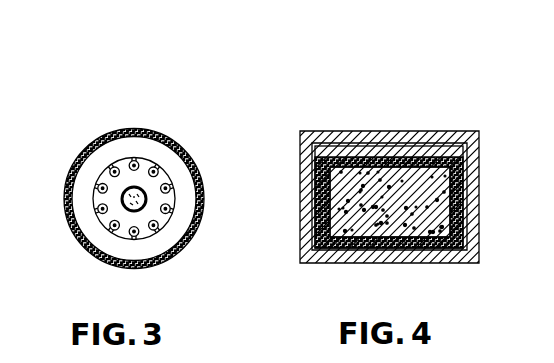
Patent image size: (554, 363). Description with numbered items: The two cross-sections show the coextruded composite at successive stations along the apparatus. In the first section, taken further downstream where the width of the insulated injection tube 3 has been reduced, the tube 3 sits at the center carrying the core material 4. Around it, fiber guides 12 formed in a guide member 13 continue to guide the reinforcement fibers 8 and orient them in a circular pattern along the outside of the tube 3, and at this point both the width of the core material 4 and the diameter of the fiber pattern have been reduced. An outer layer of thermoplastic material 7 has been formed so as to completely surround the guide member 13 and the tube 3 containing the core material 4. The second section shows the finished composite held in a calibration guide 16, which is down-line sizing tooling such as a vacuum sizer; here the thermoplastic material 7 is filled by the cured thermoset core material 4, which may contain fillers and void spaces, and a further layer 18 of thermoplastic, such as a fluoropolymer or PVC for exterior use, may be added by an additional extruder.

In FIG. 3, the insulated injection tube 3 is at (146, 204).
In FIG. 3, the core material 4 is at (132, 188).
In FIG. 4, the core material 4 is at (417, 177).
In FIG. 3, the thermoplastic material 7 is at (89, 147).
In FIG. 4, the thermoplastic material 7 is at (400, 158).
In FIG. 3, the reinforcement fibers 8 is at (156, 170).
In FIG. 3, the fiber guides 12 is at (98, 188).
In FIG. 3, the guide member 13 is at (98, 226).
In FIG. 4, the calibration guide 16 is at (322, 130).
In FIG. 4, the layer 18 is at (362, 146).